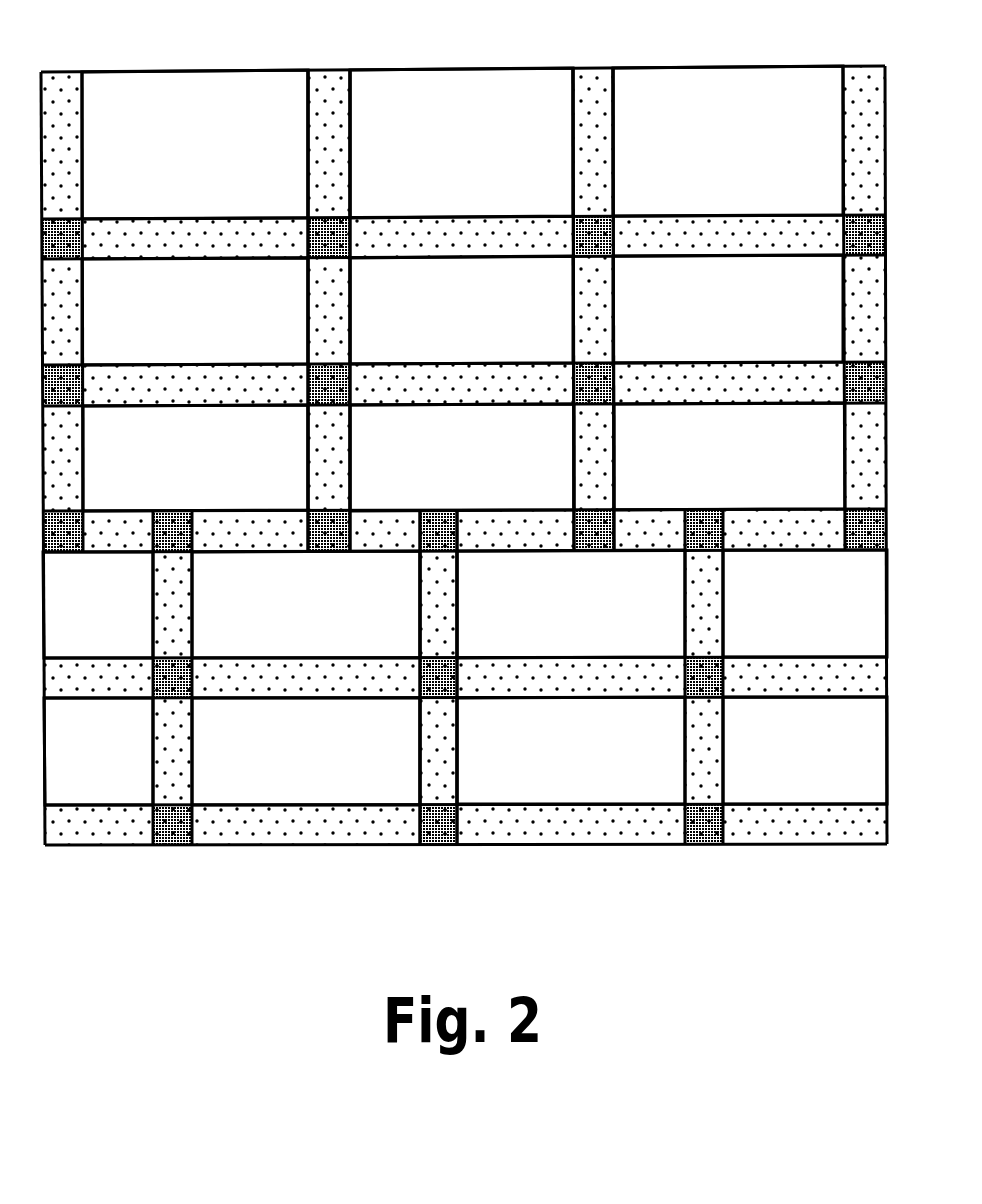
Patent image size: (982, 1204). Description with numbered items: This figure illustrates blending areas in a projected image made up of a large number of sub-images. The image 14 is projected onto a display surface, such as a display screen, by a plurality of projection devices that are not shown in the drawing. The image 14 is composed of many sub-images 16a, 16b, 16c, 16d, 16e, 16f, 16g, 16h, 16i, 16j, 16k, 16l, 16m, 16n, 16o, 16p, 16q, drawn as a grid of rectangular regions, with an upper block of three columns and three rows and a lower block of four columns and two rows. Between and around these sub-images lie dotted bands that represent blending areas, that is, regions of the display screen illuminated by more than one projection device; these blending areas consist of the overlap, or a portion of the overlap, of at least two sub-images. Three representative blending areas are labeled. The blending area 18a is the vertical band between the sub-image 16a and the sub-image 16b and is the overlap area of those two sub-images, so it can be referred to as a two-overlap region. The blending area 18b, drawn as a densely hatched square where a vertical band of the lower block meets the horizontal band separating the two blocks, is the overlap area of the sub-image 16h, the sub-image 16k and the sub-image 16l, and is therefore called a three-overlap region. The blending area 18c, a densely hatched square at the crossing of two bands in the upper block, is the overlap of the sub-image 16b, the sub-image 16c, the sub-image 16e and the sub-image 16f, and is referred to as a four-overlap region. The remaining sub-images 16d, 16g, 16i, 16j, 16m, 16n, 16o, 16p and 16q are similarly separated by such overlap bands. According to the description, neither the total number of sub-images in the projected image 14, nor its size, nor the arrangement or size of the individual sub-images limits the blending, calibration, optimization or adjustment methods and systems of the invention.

The image 14 is at (148, 71).
The sub-image 16a is at (195, 144).
The sub-image 16b is at (461, 143).
The sub-image 16c is at (728, 141).
The sub-image 16d is at (195, 311).
The sub-image 16e is at (461, 310).
The sub-image 16f is at (728, 309).
The sub-image 16g is at (195, 458).
The sub-image 16h is at (462, 457).
The sub-image 16i is at (729, 456).
The sub-image 16j is at (98, 605).
The sub-image 16k is at (306, 604).
The sub-image 16l is at (571, 604).
The sub-image 16m is at (805, 603).
The sub-image 16n is at (98, 751).
The sub-image 16o is at (306, 751).
The sub-image 16p is at (571, 750).
The sub-image 16q is at (805, 750).
The blending area 18a is at (325, 153).
The blending area 18b is at (432, 537).
The blending area 18c is at (598, 247).